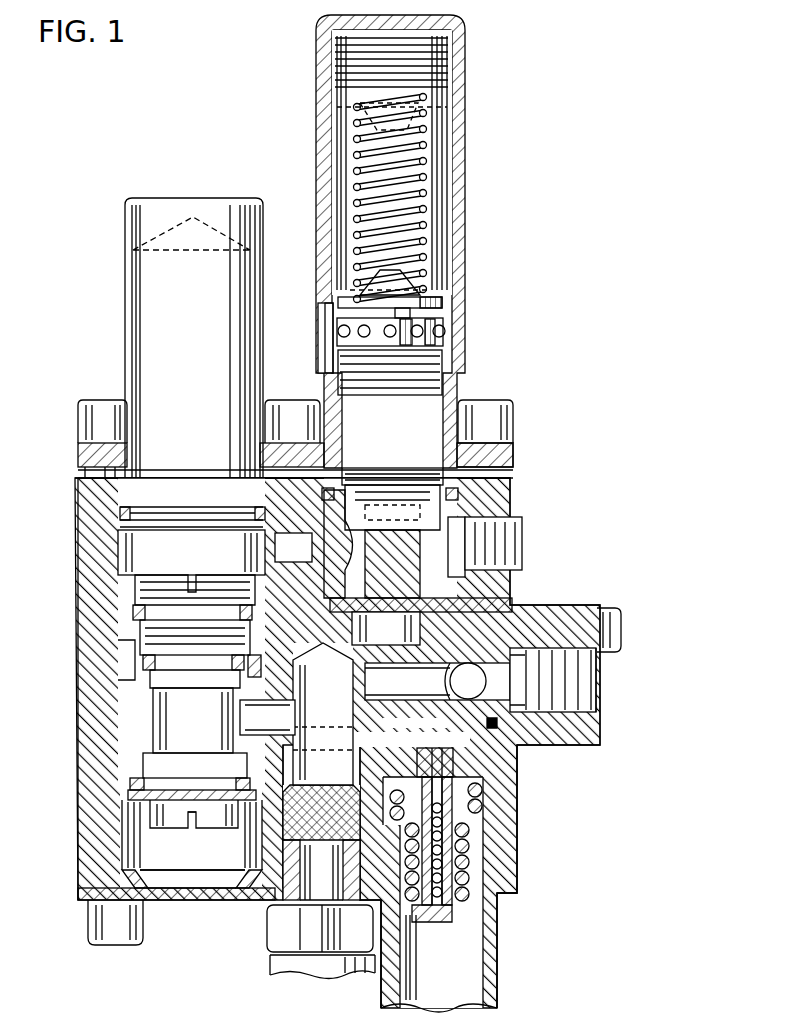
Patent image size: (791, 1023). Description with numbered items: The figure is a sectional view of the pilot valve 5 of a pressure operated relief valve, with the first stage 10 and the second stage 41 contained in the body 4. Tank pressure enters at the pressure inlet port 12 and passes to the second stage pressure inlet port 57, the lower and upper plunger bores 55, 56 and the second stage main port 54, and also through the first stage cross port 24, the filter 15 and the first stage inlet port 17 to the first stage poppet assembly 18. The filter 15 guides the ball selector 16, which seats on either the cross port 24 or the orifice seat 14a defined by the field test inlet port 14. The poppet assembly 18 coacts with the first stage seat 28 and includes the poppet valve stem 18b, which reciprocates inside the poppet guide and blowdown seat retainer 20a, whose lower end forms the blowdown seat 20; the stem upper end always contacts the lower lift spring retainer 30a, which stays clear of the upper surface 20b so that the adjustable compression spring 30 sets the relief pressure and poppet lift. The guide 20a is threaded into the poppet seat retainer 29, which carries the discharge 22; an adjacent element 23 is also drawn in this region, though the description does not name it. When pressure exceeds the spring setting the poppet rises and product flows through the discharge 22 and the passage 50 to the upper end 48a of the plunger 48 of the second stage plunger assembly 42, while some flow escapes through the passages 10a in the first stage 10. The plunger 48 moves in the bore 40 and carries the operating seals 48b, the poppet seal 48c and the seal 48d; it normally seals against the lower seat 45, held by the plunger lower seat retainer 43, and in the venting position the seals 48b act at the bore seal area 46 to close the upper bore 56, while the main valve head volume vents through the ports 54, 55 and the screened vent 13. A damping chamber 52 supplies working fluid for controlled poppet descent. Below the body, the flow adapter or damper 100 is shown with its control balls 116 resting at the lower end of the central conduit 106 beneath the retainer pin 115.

The body 4 is at (120, 805).
The pilot valve 5 is at (528, 878).
The first stage 10 is at (470, 58).
The passages in housing 10a is at (326, 335).
The pressure inlet port 12 is at (262, 905).
The screened vent 13 is at (182, 893).
The field test inlet port 14 is at (590, 690).
The orifice seat 14a is at (490, 700).
The filter 15 is at (432, 698).
The ball selector 16 is at (478, 690).
The first stage inlet port 17 is at (386, 630).
The first stage poppet assembly 18 is at (455, 560).
The poppet valve stem 18b is at (400, 312).
The first stage blowdown seat 20 is at (360, 503).
The poppet guide and blowdown seat retainer 20a is at (430, 375).
The upper surface of poppet guide 20b is at (430, 335).
The discharge 22 is at (357, 548).
The seal 23 is at (435, 516).
The first stage cross port 24 is at (365, 682).
The first stage seat 28 is at (225, 902).
The poppet seat retainer 29 is at (460, 462).
The adjustable compression spring 30 is at (423, 132).
The lower lift spring retainer 30a is at (400, 285).
The bore 40 is at (145, 745).
The second stage 41 is at (78, 403).
The second stage plunger assembly 42 is at (133, 663).
The plunger lower seat retainer 43 is at (242, 832).
The lower seat 45 is at (120, 838).
The bore seal area 46 is at (150, 712).
The plunger 48 is at (165, 635).
The upper end of plunger 48a is at (145, 566).
The operating seals 48b is at (153, 683).
The poppet seal 48c is at (150, 780).
The seal 48d is at (148, 592).
The passage or port 50 is at (305, 558).
The damping chamber 52 is at (153, 295).
The second stage main port 54 is at (298, 752).
The lower plunger bore 55 is at (240, 720).
The upper plunger bore 56 is at (262, 650).
The second stage pressure inlet port 57 is at (288, 698).
The flow adapter or damper 100 is at (462, 918).
The central conduit 106 is at (470, 900).
The retainer pin 115 is at (505, 780).
The control balls 116 is at (447, 922).